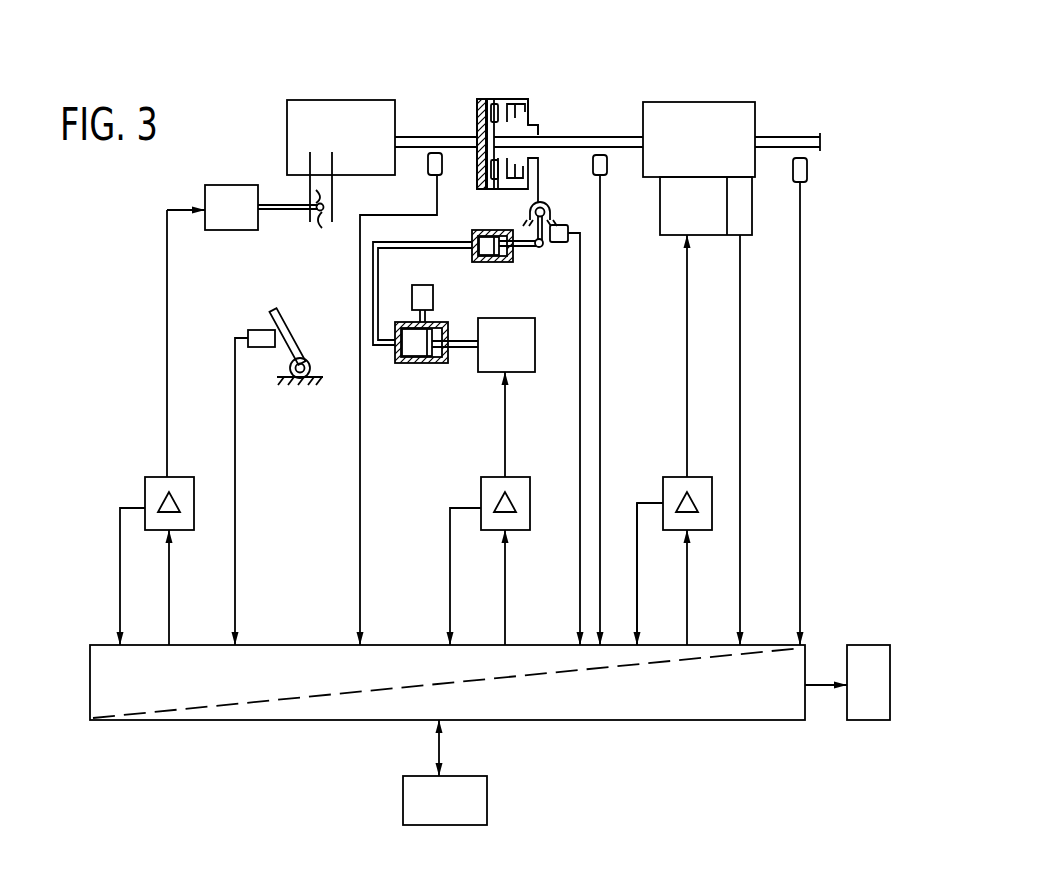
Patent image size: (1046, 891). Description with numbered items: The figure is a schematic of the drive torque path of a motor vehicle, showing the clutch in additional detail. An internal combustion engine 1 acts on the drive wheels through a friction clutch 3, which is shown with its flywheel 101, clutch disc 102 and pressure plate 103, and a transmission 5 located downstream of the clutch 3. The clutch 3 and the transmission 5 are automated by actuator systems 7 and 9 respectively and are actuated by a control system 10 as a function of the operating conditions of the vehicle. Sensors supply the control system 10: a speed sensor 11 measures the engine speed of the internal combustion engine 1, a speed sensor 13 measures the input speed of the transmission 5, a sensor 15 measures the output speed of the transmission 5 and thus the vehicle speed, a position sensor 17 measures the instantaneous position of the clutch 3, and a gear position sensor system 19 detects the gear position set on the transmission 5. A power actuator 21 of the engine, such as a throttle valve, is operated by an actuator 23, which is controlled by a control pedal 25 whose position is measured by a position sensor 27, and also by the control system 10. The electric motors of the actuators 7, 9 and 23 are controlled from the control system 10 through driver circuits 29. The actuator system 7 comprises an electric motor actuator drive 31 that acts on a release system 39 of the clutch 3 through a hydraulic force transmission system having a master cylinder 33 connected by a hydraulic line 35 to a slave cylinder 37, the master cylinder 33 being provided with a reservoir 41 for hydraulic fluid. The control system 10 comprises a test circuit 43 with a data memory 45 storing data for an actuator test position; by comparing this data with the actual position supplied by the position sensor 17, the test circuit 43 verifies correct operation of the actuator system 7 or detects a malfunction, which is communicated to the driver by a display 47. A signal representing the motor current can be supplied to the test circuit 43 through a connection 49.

The internal combustion engine 1 is at (349, 130).
The friction clutch 3 is at (507, 97).
The transmission 5 is at (711, 112).
The actuator system 7 is at (500, 288).
The actuator system 9 is at (676, 228).
The control system 10 is at (311, 640).
The speed sensor 11 is at (416, 147).
The speed sensor 13 is at (599, 153).
The sensor 15 is at (807, 172).
The position sensor 17 is at (560, 223).
The gear position sensor system 19 is at (745, 229).
The power actuator 21 is at (320, 214).
The actuator 23 is at (228, 197).
The control pedal 25 is at (297, 338).
The position sensor 27 is at (262, 346).
The driver circuit 29 is at (153, 482).
The electric motor actuator drive 31 is at (525, 343).
The master cylinder 33 is at (420, 363).
The hydraulic line 35 is at (427, 252).
The slave cylinder 37 is at (487, 230).
The release system 39 is at (540, 124).
The reservoir 41 is at (426, 297).
The test circuit 43 is at (678, 705).
The data memory 45 is at (468, 802).
The display 47 is at (867, 652).
The connection 49 is at (637, 605).
The flywheel 101 is at (479, 100).
The clutch disc 102 is at (495, 190).
The pressure plate 103 is at (518, 98).